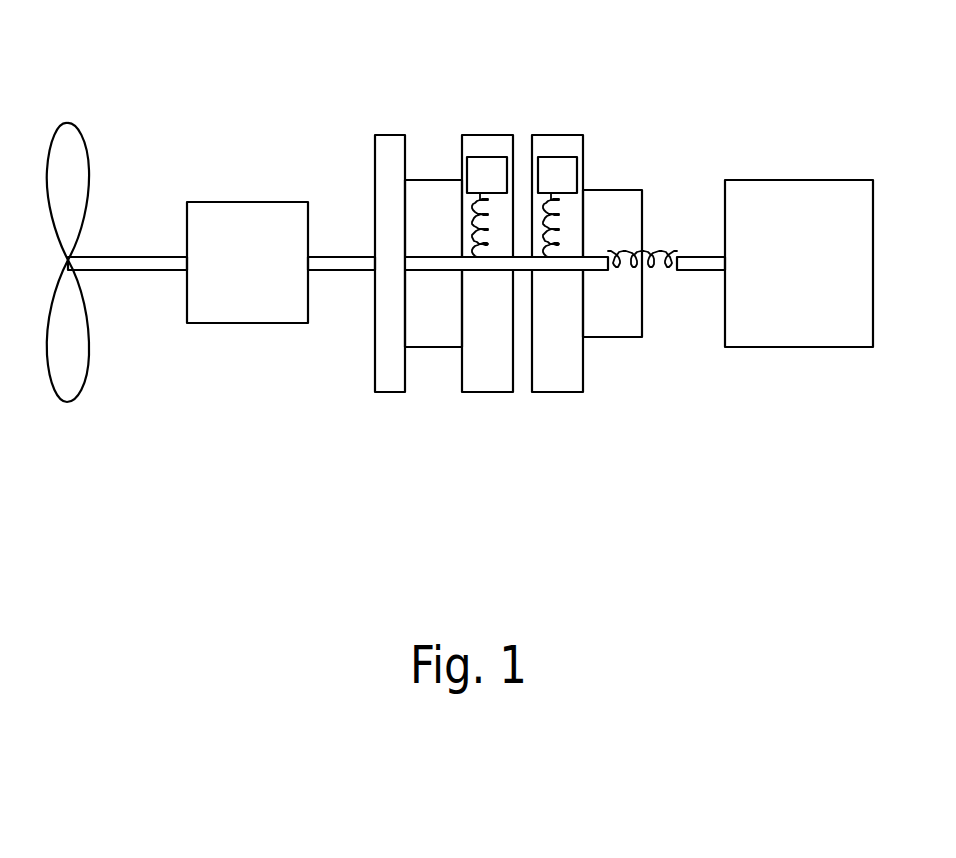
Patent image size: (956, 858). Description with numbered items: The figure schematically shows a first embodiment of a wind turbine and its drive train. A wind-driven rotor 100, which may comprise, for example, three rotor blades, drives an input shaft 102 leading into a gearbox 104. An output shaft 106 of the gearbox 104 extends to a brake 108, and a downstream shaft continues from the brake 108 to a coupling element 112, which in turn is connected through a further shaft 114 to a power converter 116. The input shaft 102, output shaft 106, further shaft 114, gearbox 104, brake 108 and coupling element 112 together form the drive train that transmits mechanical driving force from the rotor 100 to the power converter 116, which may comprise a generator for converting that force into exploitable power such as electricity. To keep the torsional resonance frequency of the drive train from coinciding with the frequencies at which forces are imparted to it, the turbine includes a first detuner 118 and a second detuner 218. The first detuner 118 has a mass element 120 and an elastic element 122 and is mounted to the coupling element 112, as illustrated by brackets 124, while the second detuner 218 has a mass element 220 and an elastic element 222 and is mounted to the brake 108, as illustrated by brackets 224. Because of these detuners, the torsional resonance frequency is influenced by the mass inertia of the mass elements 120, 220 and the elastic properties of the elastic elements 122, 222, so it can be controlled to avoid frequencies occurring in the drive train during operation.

The wind-driven rotor 100 is at (71, 409).
The input shaft 102 is at (168, 257).
The gearbox 104 is at (255, 202).
The output shaft 106 is at (368, 257).
The brake 108 is at (375, 364).
The brackets 224 is at (450, 180).
The second detuner 218 is at (481, 100).
The mass element 220 is at (482, 157).
The elastic element 222 is at (473, 222).
The first detuner 118 is at (561, 104).
The mass element 120 is at (556, 157).
The elastic element 122 is at (553, 210).
The brackets 124 is at (634, 190).
The coupling element 112 is at (650, 248).
The further shaft 114 is at (717, 272).
The power converter 116 is at (780, 180).